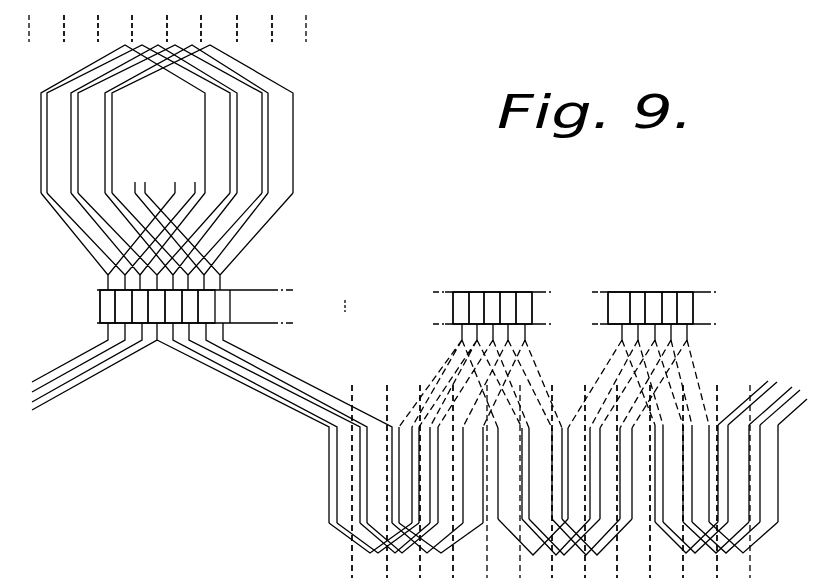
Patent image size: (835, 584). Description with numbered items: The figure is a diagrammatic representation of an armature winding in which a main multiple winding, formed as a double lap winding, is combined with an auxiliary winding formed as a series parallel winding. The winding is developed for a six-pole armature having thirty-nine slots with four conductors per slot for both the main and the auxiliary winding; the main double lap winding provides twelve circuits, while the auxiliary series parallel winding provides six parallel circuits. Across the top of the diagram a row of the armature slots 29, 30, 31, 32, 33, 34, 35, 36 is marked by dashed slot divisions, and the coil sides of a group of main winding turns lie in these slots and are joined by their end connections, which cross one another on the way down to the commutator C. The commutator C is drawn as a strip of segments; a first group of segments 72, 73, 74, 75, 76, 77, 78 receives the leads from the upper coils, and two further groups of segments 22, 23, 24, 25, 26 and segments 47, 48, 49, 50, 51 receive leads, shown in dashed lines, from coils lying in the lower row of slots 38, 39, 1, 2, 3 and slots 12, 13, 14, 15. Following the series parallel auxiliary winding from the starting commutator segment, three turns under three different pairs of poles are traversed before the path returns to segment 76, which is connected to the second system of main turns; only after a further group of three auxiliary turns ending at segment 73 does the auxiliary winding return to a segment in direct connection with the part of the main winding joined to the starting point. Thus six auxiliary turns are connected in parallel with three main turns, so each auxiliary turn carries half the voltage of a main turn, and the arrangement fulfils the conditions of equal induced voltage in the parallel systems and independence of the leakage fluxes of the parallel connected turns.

The armature slot 29 is at (46, 28).
The armature slot 30 is at (81, 28).
The armature slot 31 is at (115, 28).
The armature slot 32 is at (149, 28).
The armature slot 33 is at (184, 28).
The armature slot 34 is at (219, 28).
The armature slot 35 is at (254, 28).
The armature slot 36 is at (289, 28).
The commutator segment 72 is at (107, 306).
The commutator segment 73 is at (123, 306).
The commutator segment 74 is at (140, 306).
The commutator segment 75 is at (156, 306).
The commutator segment 76 is at (173, 306).
The commutator segment 77 is at (190, 306).
The commutator segment 78 is at (206, 306).
The commutator C is at (338, 305).
The commutator segment 22 is at (461, 308).
The commutator segment 23 is at (476, 308).
The commutator segment 24 is at (583, 435).
The commutator segment 25 is at (608, 435).
The commutator segment 26 is at (633, 435).
The commutator segment 47 is at (619, 308).
The commutator segment 48 is at (637, 308).
The commutator segment 49 is at (653, 308).
The commutator segment 50 is at (669, 308).
The commutator segment 51 is at (685, 308).
The armature slot 38 is at (342, 481).
The armature slot 39 is at (369, 481).
The armature slot 1 is at (403, 481).
The armature slot 2 is at (436, 481).
The armature slot 3 is at (470, 481).
The armature slot 12 is at (536, 481).
The armature slot 13 is at (568, 481).
The armature slot 14 is at (601, 481).
The armature slot 15 is at (633, 481).